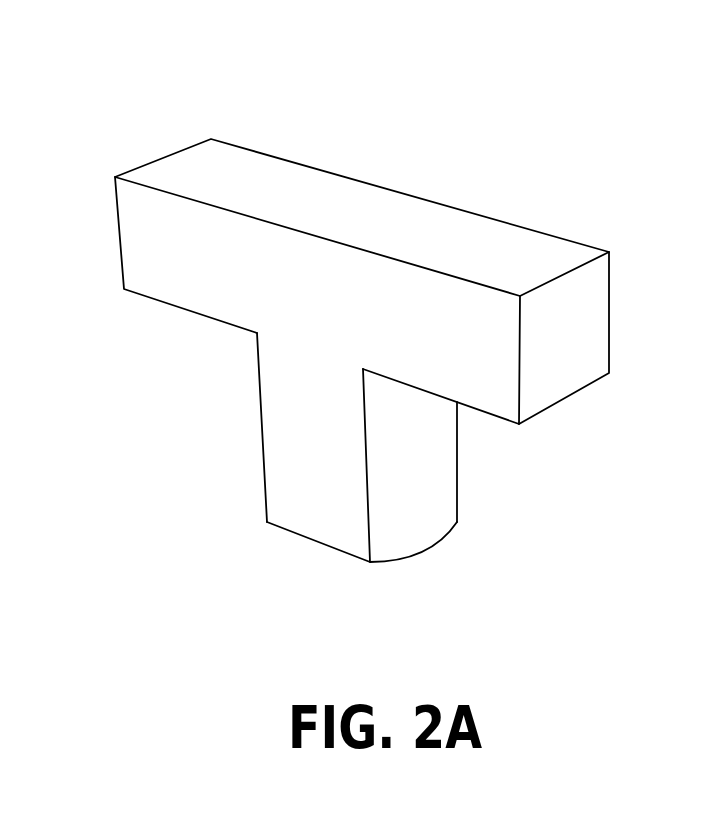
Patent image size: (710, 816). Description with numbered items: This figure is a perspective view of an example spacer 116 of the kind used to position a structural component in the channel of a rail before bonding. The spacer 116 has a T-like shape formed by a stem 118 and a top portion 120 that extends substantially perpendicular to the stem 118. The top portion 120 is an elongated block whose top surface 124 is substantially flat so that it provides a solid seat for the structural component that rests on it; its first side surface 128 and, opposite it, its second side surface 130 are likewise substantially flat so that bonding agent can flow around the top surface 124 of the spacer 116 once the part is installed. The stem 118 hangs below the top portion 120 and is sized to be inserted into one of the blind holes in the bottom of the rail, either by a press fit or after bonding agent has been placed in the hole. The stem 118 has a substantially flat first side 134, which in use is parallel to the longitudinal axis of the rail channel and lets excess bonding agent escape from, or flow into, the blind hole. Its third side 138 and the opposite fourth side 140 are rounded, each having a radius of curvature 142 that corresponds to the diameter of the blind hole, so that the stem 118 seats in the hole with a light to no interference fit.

The spacer 116 is at (497, 100).
The stem 118 is at (308, 554).
The top portion 120 is at (395, 158).
The top surface 124 is at (328, 187).
The first side surface 128 is at (183, 278).
The second side surface 130 is at (510, 222).
The first side 134 is at (285, 460).
The third side 138 is at (258, 390).
The fourth side 140 is at (433, 450).
The radius of curvature 142 is at (425, 552).